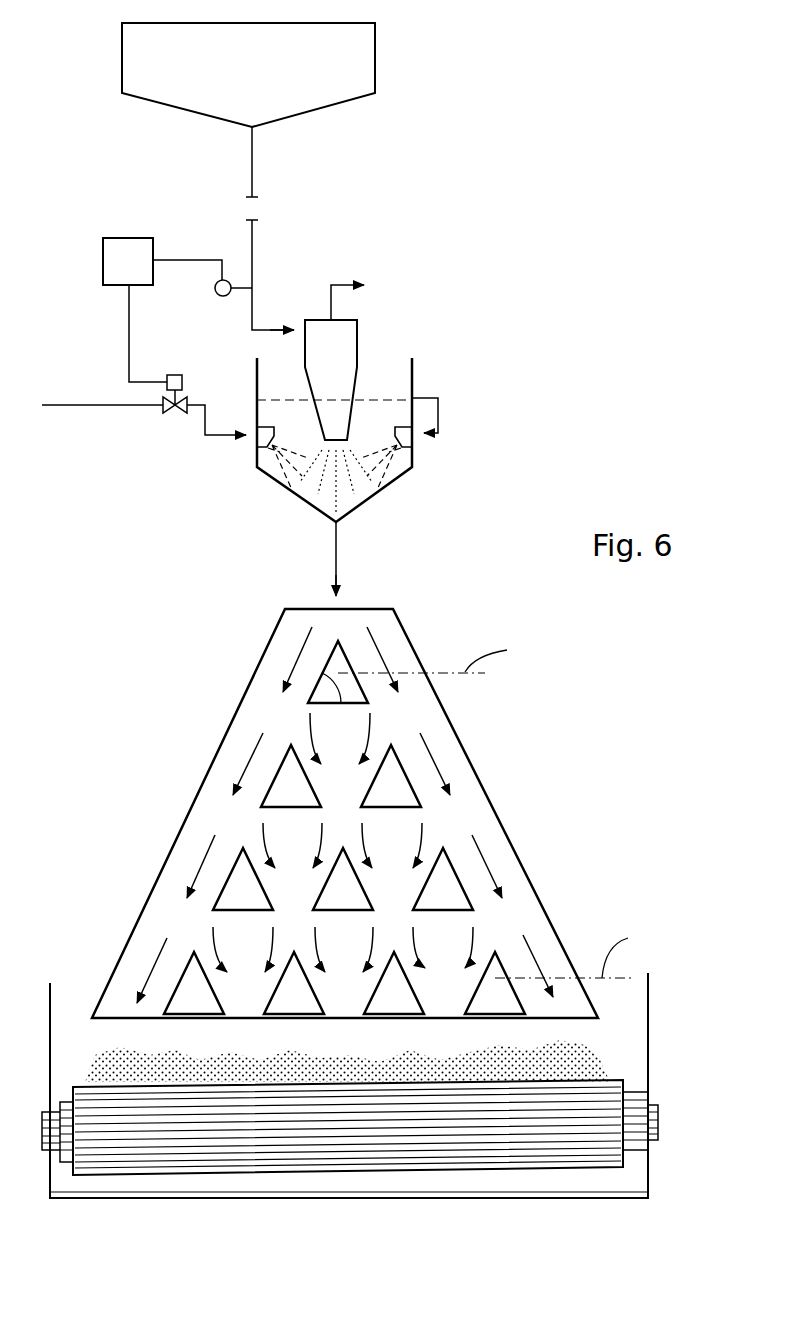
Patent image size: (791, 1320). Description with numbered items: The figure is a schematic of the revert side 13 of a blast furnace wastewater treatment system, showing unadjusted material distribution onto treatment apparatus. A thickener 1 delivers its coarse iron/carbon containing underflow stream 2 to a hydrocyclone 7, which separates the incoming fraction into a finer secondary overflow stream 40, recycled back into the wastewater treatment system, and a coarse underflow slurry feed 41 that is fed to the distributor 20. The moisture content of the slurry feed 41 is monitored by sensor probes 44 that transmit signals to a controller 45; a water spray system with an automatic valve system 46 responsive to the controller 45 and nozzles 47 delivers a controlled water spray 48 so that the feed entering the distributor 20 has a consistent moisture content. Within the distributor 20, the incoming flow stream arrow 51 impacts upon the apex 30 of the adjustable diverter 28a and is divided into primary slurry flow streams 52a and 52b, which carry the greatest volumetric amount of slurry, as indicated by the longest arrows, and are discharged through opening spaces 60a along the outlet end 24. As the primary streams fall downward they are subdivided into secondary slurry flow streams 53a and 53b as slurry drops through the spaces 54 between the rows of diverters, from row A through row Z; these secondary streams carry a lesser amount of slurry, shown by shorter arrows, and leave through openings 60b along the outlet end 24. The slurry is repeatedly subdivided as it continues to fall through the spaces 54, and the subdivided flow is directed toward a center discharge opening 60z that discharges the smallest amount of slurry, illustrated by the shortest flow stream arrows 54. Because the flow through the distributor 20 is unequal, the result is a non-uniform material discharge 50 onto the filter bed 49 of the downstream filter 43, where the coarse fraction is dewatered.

The thickener 1 is at (122, 76).
The underflow stream 2 is at (254, 246).
The secondary overflow stream 40 is at (345, 283).
The controller 45 is at (118, 238).
The sensor probes 44 is at (223, 297).
The automatic valve system 46 is at (171, 413).
The hydrocyclone 7 is at (358, 340).
The revert side 13 is at (208, 547).
The nozzles 47 is at (257, 455).
The water spray 48 is at (283, 470).
The underflow slurry feed 41 is at (336, 545).
The incoming flow stream arrow 51 is at (336, 583).
The distributor 20 is at (361, 577).
The apex 30 is at (338, 650).
The adjustable diverter 28a is at (340, 703).
The primary slurry flow stream 52a is at (386, 652).
The primary slurry flow stream 52b is at (296, 651).
The secondary slurry flow stream 53a is at (372, 716).
The secondary slurry flow stream 53b is at (305, 716).
The spaces 54 is at (290, 733).
The filter bed 49 is at (77, 1077).
The non-uniform material discharge 50 is at (572, 1063).
The downstream filter 43 is at (678, 1046).
The outlet end 24 is at (383, 1046).
The opening spaces 60a is at (135, 1012).
The openings 60b is at (243, 1010).
The center discharge opening 60z is at (339, 1058).